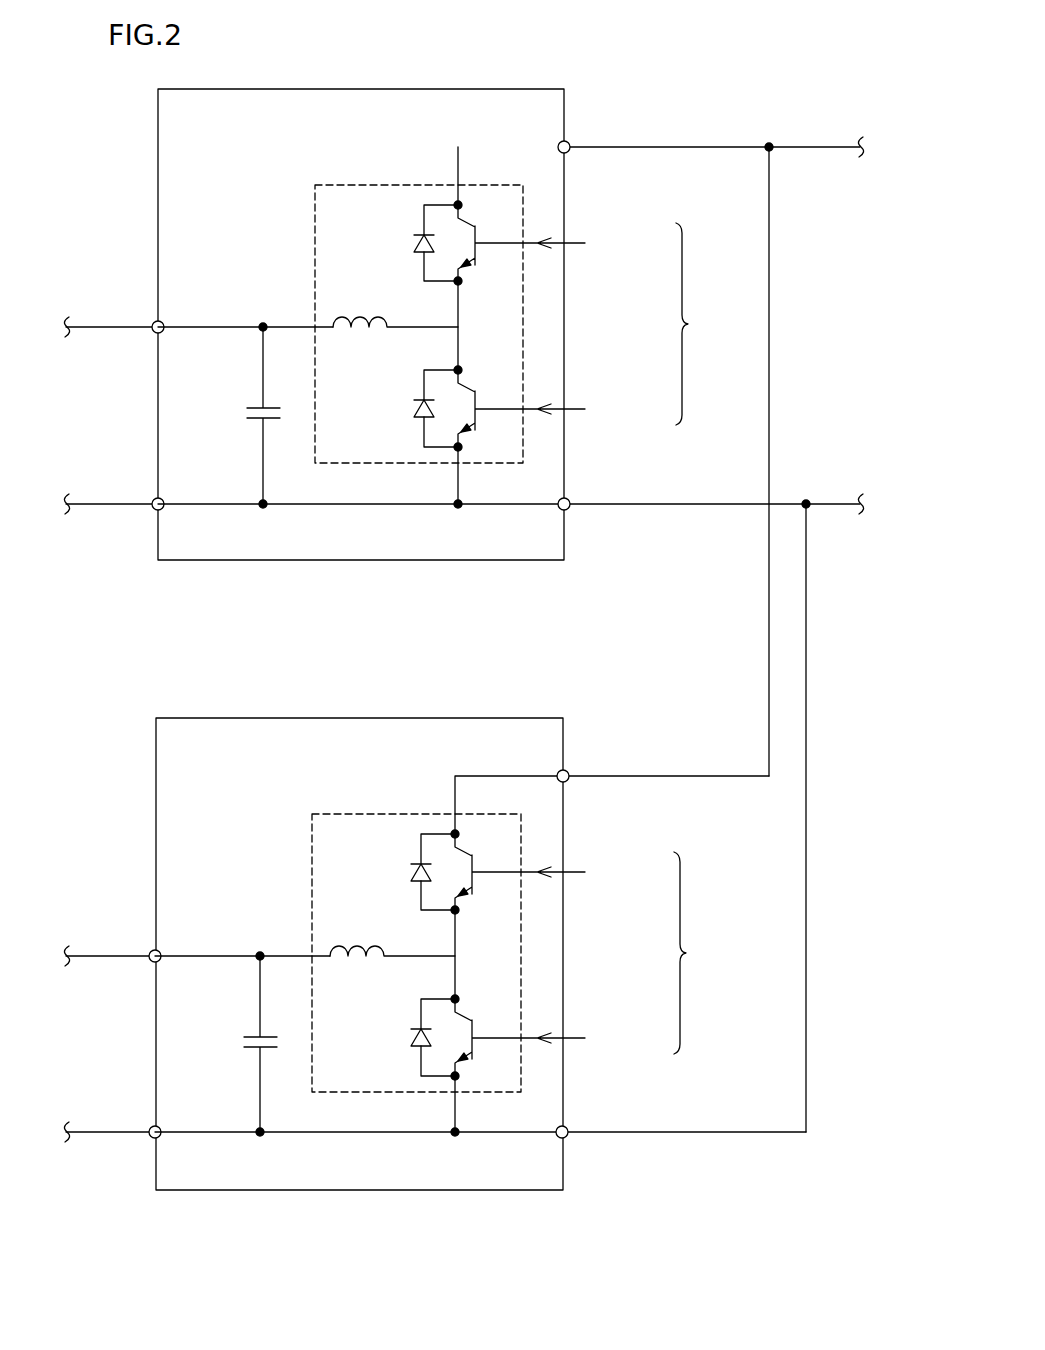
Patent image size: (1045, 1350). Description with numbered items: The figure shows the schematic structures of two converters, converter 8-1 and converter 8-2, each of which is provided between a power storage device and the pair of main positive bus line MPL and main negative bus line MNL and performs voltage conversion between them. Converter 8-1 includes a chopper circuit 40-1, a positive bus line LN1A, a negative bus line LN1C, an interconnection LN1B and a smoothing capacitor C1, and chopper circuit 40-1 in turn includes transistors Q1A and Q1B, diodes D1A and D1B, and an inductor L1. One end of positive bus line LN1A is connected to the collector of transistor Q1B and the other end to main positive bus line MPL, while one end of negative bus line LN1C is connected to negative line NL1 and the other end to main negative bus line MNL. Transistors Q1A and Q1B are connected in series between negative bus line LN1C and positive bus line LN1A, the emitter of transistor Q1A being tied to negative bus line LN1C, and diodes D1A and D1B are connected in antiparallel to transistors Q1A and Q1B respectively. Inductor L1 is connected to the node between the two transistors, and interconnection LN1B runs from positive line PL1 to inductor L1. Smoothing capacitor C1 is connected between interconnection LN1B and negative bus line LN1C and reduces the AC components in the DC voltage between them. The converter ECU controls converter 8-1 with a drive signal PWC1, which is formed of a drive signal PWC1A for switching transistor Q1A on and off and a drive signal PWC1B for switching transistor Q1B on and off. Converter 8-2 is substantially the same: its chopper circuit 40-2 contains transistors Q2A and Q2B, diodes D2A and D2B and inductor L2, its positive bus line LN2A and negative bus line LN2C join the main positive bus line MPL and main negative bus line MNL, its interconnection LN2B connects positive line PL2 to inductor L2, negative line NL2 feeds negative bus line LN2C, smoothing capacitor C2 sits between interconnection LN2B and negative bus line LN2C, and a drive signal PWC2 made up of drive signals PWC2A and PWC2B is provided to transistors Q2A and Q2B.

The converter 8-1 is at (528, 89).
The converter 8-2 is at (526, 718).
The chopper circuit 40-1 is at (347, 185).
The chopper circuit 40-2 is at (344, 814).
The inductor L1 is at (395, 309).
The inductor L2 is at (392, 938).
The smoothing capacitor C1 is at (257, 407).
The smoothing capacitor C2 is at (254, 1036).
The transistor Q1A is at (519, 366).
The transistor Q1B is at (519, 242).
The diode D1A is at (416, 408).
The diode D1B is at (416, 242).
The transistor Q2A is at (518, 995).
The transistor Q2B is at (518, 871).
The diode D2A is at (413, 1037).
The diode D2B is at (413, 871).
The positive bus line LN1A is at (514, 161).
The interconnection LN1B is at (245, 315).
The negative bus line LN1C is at (364, 478).
The positive bus line LN2A is at (612, 790).
The interconnection LN2B is at (242, 944).
The negative bus line LN2C is at (480, 1107).
The positive line PL1 is at (98, 326).
The negative line NL1 is at (98, 503).
The positive line PL2 is at (96, 955).
The negative line NL2 is at (96, 1131).
The main positive bus line MPL is at (835, 146).
The main negative bus line MNL is at (835, 503).
The drive signal PWC1 is at (713, 324).
The drive signal PWC1A is at (629, 410).
The drive signal PWC1B is at (629, 245).
The drive signal PWC2 is at (711, 953).
The drive signal PWC2A is at (629, 1039).
The drive signal PWC2B is at (629, 874).